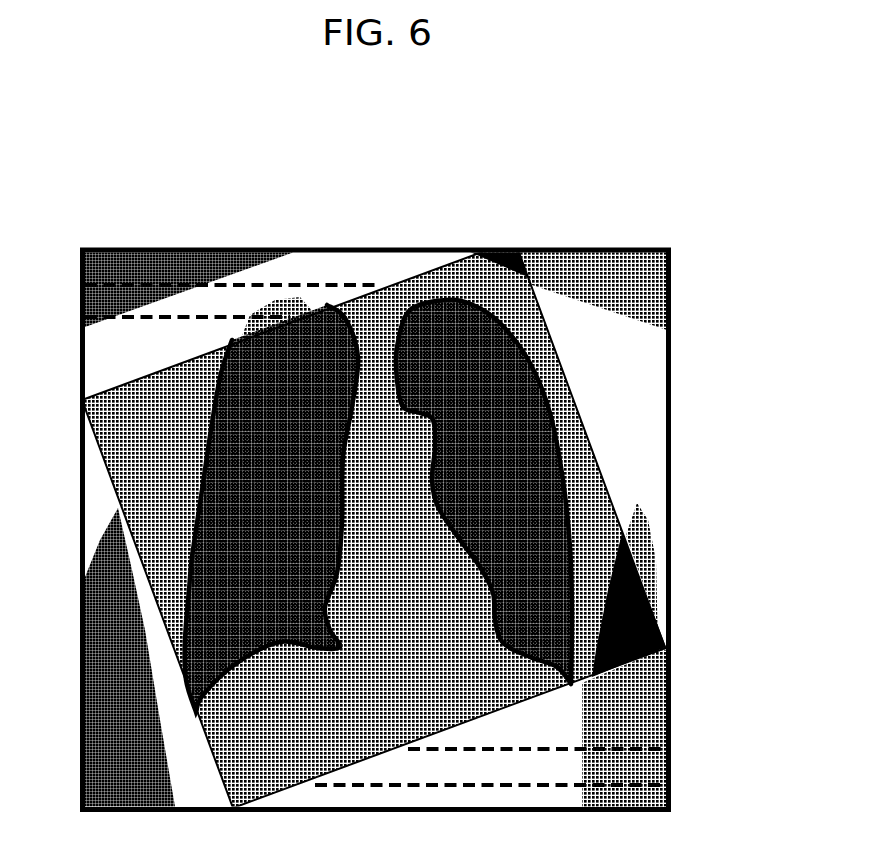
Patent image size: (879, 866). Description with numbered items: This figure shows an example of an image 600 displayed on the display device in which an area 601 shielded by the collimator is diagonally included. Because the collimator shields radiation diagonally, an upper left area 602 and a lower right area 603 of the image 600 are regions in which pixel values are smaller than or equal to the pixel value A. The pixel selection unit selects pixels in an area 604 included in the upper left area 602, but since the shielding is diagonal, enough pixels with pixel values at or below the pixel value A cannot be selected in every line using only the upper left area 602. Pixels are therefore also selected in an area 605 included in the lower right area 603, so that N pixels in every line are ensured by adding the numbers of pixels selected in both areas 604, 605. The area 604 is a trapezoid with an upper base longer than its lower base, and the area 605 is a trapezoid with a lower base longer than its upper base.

The image 600 is at (393, 148).
The area shielded by the collimator 601 is at (640, 352).
The upper left area 602 is at (182, 268).
The lower right area 603 is at (652, 697).
The area 604 is at (243, 282).
The area 605 is at (627, 752).